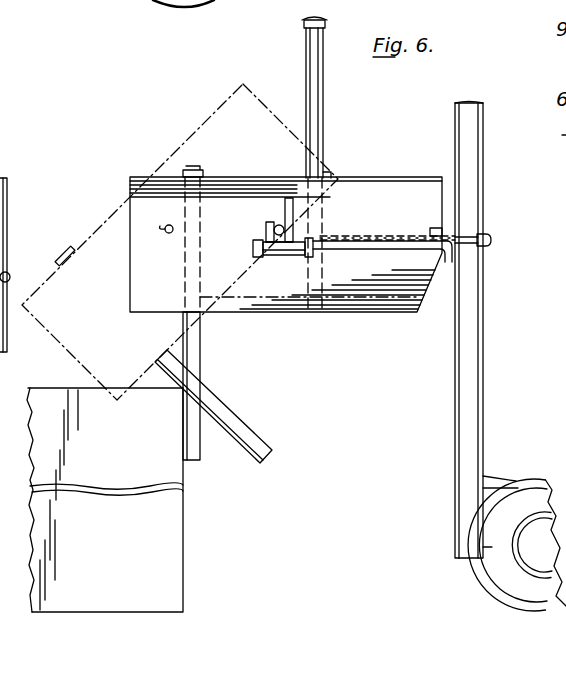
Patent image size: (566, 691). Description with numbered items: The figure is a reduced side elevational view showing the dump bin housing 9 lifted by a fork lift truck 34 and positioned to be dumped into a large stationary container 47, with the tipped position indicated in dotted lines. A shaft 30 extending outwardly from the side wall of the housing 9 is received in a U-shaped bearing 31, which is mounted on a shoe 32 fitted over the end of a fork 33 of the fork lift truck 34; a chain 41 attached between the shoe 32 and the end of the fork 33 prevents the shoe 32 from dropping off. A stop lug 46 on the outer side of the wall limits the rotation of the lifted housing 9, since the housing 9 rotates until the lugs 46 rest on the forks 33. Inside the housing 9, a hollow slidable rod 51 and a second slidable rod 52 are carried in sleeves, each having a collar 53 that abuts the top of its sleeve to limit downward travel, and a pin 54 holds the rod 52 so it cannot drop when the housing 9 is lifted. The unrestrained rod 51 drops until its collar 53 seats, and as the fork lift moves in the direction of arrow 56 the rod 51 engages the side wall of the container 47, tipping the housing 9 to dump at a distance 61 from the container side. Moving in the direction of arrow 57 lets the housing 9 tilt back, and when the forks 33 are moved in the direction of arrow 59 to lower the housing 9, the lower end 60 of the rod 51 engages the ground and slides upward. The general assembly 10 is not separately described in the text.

The dump bin housing 9 is at (214, 113).
The apparatus housing 10 is at (385, 156).
The shaft 30 is at (280, 225).
The bearing 31 is at (266, 226).
The shoe 32 is at (255, 247).
The fork 33 is at (380, 256).
The fork lift truck 34 is at (455, 523).
The chain 41 is at (377, 236).
The stop lug 46 is at (436, 228).
The container 47 is at (183, 498).
The slidable rod 51 is at (195, 362).
The slidable rod 52 is at (308, 66).
The collar 53 is at (305, 24).
The pin 54 is at (305, 158).
The arrow 56 is at (258, 330).
The arrow 57 is at (258, 343).
The arrow 59 is at (441, 362).
The lower end of rod 60 is at (192, 462).
The distance 61 is at (183, 430).